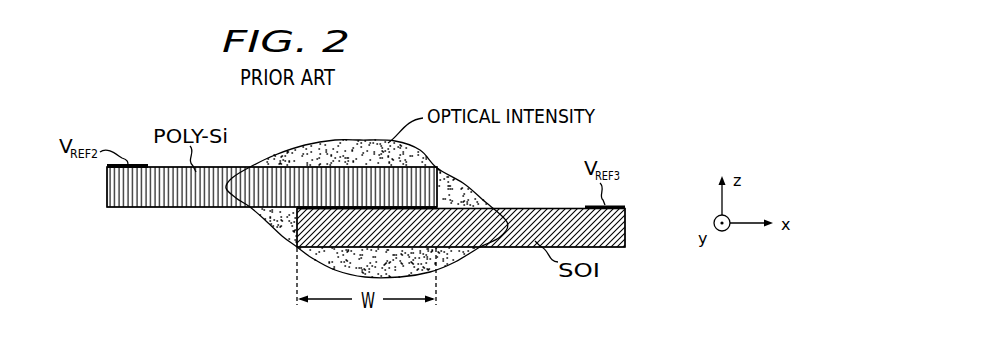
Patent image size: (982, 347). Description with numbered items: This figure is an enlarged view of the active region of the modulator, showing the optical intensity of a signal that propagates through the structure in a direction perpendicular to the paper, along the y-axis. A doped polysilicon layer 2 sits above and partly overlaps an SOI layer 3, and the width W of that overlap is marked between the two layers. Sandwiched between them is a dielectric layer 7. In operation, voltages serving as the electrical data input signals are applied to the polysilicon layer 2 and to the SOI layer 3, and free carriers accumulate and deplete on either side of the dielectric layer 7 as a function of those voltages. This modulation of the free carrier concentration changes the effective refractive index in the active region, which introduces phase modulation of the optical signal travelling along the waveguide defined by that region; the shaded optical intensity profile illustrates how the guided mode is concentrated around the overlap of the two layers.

The polysilicon layer 2 is at (107, 185).
The SOI layer 3 is at (600, 232).
The dielectric layer 7 is at (437, 208).